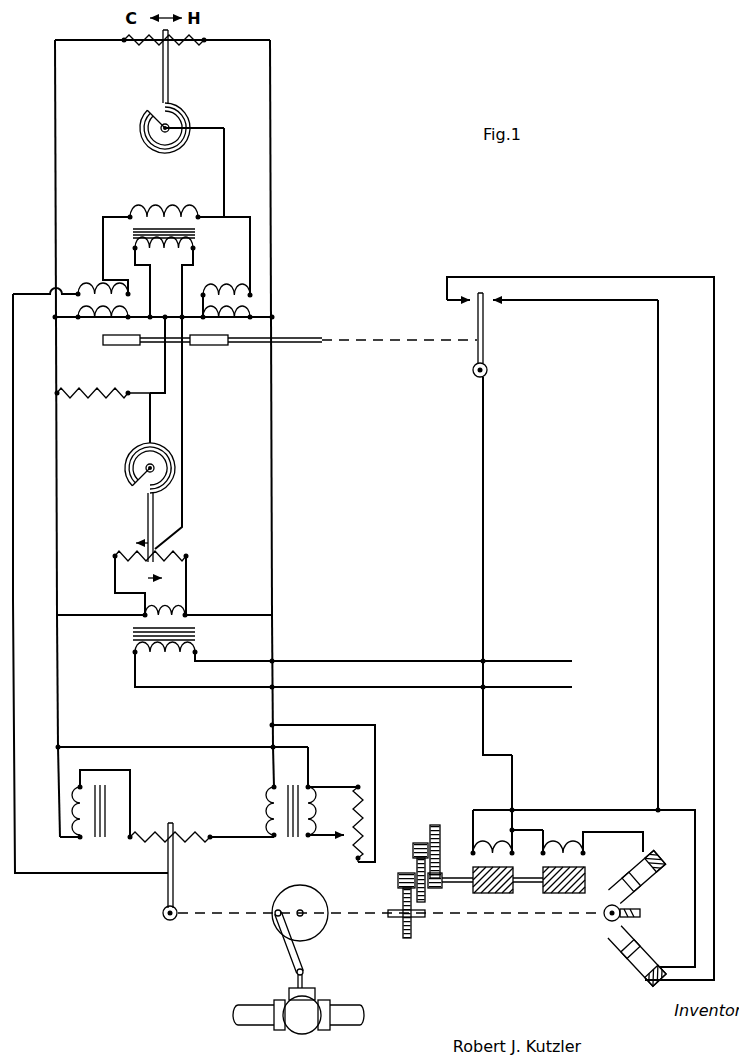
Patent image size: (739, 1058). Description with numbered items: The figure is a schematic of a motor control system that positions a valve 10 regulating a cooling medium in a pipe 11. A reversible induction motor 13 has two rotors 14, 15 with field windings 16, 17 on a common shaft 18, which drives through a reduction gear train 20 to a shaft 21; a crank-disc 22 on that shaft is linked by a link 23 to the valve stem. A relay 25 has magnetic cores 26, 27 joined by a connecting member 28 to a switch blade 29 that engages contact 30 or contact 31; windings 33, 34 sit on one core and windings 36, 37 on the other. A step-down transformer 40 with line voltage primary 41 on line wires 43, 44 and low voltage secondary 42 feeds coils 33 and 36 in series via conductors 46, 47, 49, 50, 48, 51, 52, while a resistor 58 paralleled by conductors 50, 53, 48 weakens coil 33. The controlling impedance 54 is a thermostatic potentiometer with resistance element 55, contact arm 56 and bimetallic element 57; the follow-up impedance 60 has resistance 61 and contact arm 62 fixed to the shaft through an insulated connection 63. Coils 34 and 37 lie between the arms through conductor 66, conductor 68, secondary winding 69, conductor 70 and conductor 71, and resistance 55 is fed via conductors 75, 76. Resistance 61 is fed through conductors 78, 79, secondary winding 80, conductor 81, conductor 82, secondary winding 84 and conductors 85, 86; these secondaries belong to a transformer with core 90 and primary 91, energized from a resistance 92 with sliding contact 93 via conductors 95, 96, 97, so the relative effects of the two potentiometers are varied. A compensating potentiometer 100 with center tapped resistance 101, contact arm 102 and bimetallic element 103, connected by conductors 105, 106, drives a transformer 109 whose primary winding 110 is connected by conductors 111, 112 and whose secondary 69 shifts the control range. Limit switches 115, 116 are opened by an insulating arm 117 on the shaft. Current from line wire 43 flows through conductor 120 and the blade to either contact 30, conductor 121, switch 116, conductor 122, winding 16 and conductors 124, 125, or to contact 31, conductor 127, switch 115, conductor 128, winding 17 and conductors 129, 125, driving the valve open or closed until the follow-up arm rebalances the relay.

The valve 10 is at (298, 1004).
The pipe 11 is at (347, 1016).
The motor 13 is at (507, 857).
The rotor 14 is at (496, 894).
The rotor 15 is at (555, 894).
The field winding 16 is at (500, 847).
The field winding 17 is at (566, 847).
The common shaft 18 is at (457, 885).
The reduction gear train 20 is at (451, 889).
The shaft 21 is at (404, 920).
The crank-disc 22 is at (308, 895).
The link 23 is at (285, 953).
The relay 25 is at (286, 316).
The magnetic core 26 is at (120, 346).
The magnetic core 27 is at (203, 346).
The connecting member 28 is at (322, 343).
The switch blade 29 is at (485, 330).
The contact 30 is at (466, 305).
The contact 31 is at (497, 300).
The relay winding 33 is at (92, 326).
The relay winding 34 is at (92, 290).
The relay winding 36 is at (244, 317).
The relay winding 37 is at (233, 290).
The step-down transformer 40 is at (193, 633).
The line voltage primary 41 is at (172, 658).
The low voltage secondary 42 is at (172, 612).
The line wire 43 is at (314, 660).
The line wire 44 is at (350, 687).
The conductor 46 is at (236, 612).
The conductor 47 is at (273, 514).
The conductor 48 is at (13, 362).
The conductor 49 is at (175, 315).
The conductor 50 is at (138, 317).
The conductor 51 is at (57, 435).
The conductor 52 is at (92, 619).
The conductor 53 is at (165, 373).
The controlling impedance 54 is at (175, 94).
The resistance element 55 is at (138, 48).
The contact arm 56 is at (163, 90).
The bimetallic element 57 is at (147, 147).
The resistor 58 is at (99, 397).
The follow-up impedance 60 is at (170, 871).
The resistance 61 is at (189, 832).
The contact arm 62 is at (166, 850).
The insulated connection 63 is at (165, 910).
The conductor 66 is at (224, 170).
The conductor 68 is at (250, 215).
The secondary winding 69 is at (166, 213).
The conductor 70 is at (103, 228).
The conductor 71 is at (14, 489).
The conductor 75 is at (272, 143).
The conductor 76 is at (55, 143).
The conductor 78 is at (274, 642).
The conductor 79 is at (273, 777).
The secondary winding 80 is at (270, 815).
The conductor 81 is at (237, 840).
The conductor 82 is at (131, 803).
The secondary winding 84 is at (76, 814).
The conductor 85 is at (59, 780).
The conductor 86 is at (58, 705).
The transformer core 90 is at (292, 840).
The primary 91 is at (317, 810).
The resistance 92 is at (364, 818).
The sliding contact 93 is at (343, 842).
The conductor 95 is at (199, 746).
The conductor 96 is at (336, 786).
The conductor 97 is at (376, 780).
The compensating potentiometer 100 is at (150, 515).
The center tapped resistance 101 is at (181, 556).
The contact arm 102 is at (157, 532).
The bimetallic element 103 is at (125, 466).
The conductor 105 is at (115, 588).
The conductor 106 is at (187, 600).
The transformer 109 is at (199, 233).
The primary winding 110 is at (135, 248).
The conductor 111 is at (152, 428).
The conductor 112 is at (184, 421).
The limit switch 115 is at (650, 882).
The limit switch 116 is at (630, 965).
The arm 117 is at (642, 914).
The conductor 120 is at (484, 496).
The conductor 121 is at (643, 276).
The conductor 122 is at (680, 809).
The conductor 124 is at (518, 843).
The conductor 125 is at (513, 767).
The conductor 127 is at (657, 470).
The conductor 128 is at (614, 834).
The conductor 129 is at (536, 829).